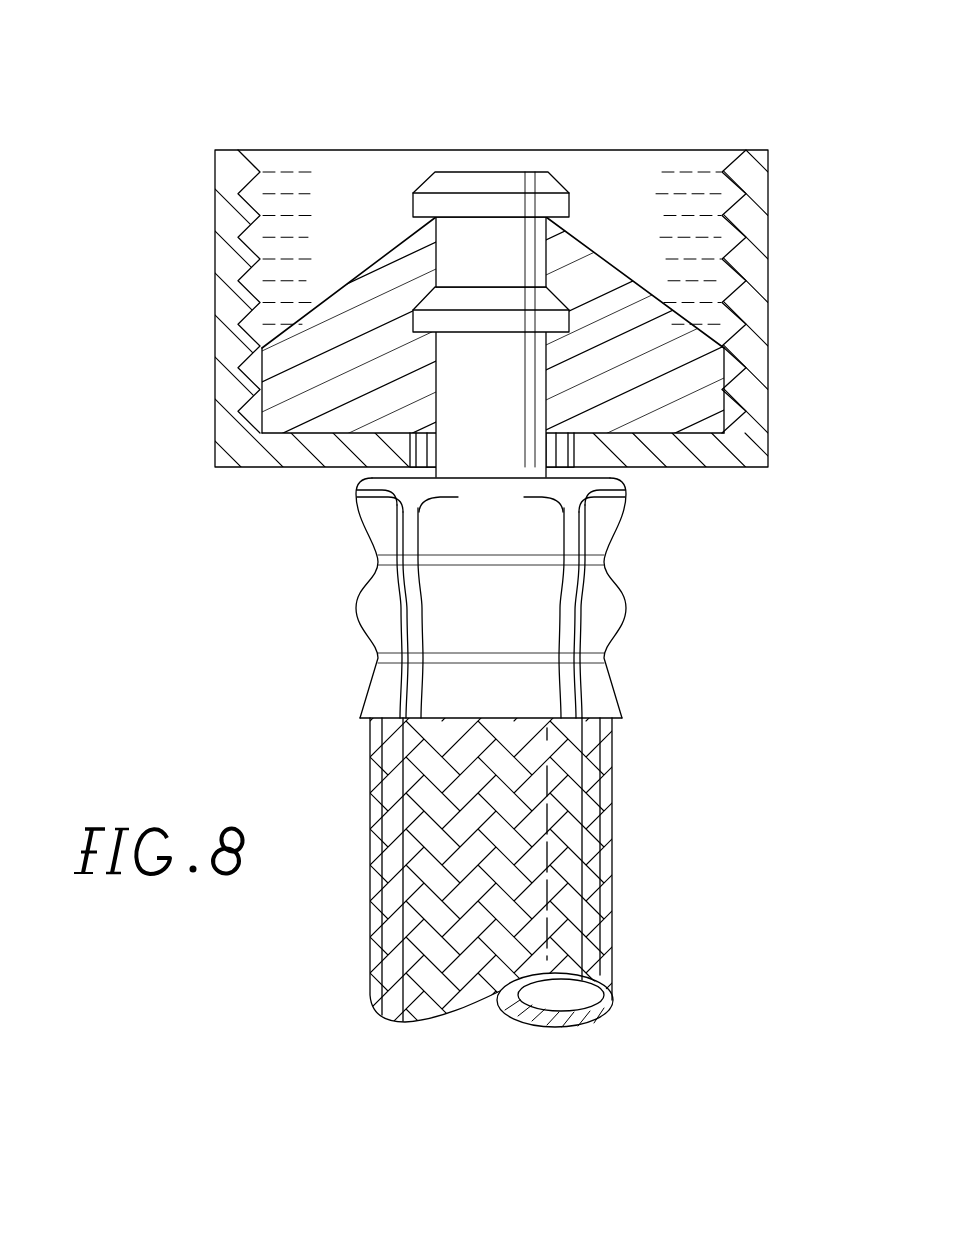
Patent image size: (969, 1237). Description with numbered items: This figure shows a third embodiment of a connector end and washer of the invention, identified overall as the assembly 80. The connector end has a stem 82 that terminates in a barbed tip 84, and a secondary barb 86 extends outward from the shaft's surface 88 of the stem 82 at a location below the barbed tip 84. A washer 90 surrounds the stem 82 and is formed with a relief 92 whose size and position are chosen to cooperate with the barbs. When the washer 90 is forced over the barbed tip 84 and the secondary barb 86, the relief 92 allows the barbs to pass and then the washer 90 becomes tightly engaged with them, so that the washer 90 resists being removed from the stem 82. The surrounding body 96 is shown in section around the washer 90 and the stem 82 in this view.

The hose coupling assembly 80 is at (186, 130).
The stem 82 is at (575, 159).
The barbed tip 84 is at (538, 170).
The secondary barb 86 is at (542, 297).
The shaft's surface 88 is at (503, 402).
The washer 90 is at (356, 278).
The relief 92 is at (428, 298).
The threaded body 96 is at (222, 228).